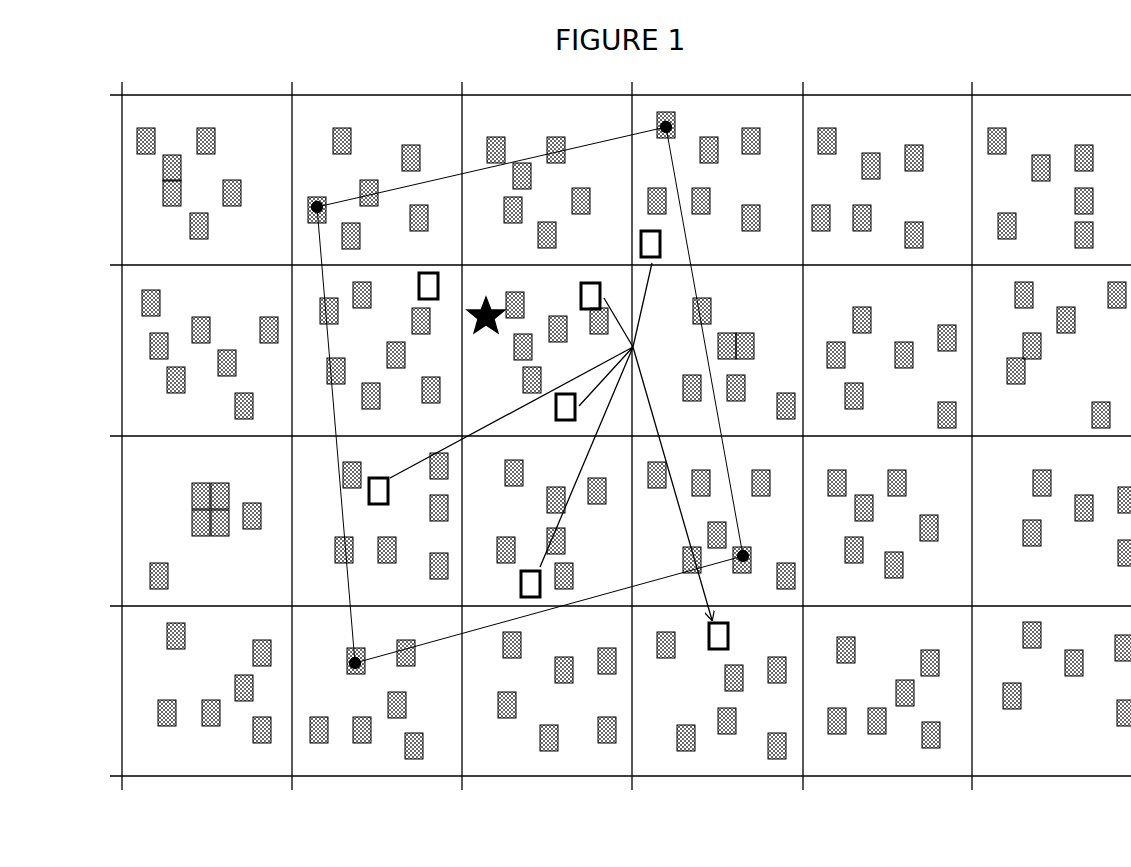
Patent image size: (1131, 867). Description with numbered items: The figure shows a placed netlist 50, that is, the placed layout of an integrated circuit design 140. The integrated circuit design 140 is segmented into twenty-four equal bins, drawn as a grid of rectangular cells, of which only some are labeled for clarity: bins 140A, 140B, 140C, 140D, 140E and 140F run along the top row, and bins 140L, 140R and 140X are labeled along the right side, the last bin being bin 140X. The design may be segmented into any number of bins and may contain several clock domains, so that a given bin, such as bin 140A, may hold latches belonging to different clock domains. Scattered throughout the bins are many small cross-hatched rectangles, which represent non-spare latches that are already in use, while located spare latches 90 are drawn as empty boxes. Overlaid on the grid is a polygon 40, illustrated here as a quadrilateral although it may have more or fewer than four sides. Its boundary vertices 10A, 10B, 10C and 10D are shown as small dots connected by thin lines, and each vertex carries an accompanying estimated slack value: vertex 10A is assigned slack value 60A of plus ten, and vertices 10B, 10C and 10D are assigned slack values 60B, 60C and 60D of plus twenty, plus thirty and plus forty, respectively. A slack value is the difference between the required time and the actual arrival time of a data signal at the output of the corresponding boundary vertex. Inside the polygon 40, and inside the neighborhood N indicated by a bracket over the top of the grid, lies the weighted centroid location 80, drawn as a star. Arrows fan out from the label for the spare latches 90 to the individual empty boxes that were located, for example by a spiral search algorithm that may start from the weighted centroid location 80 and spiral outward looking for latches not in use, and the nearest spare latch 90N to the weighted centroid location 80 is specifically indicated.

The integrated circuit design 140 is at (220, 84).
The bin 140A is at (207, 419).
The bin 140B is at (372, 427).
The bin 140C is at (541, 423).
The bin 140D is at (721, 443).
The bin 140E is at (881, 422).
The bin 140F is at (1035, 172).
The bin 140L is at (1052, 357).
The bin 140R is at (1054, 535).
The bin 140X is at (1057, 697).
The placed netlist 50 is at (376, 112).
The neighborhood N is at (917, 84).
The polygon 40 is at (334, 459).
The boundary vertex 10A is at (310, 204).
The boundary vertex 10B is at (657, 122).
The boundary vertex 10C is at (752, 556).
The boundary vertex 10D is at (344, 662).
The slack value 60A is at (304, 167).
The slack value 60B is at (697, 112).
The slack value 60C is at (751, 601).
The slack value 60D is at (322, 622).
The spare latches 90 is at (548, 440).
The nearest spare latch 90N is at (442, 287).
The weighted centroid location 80 is at (485, 336).